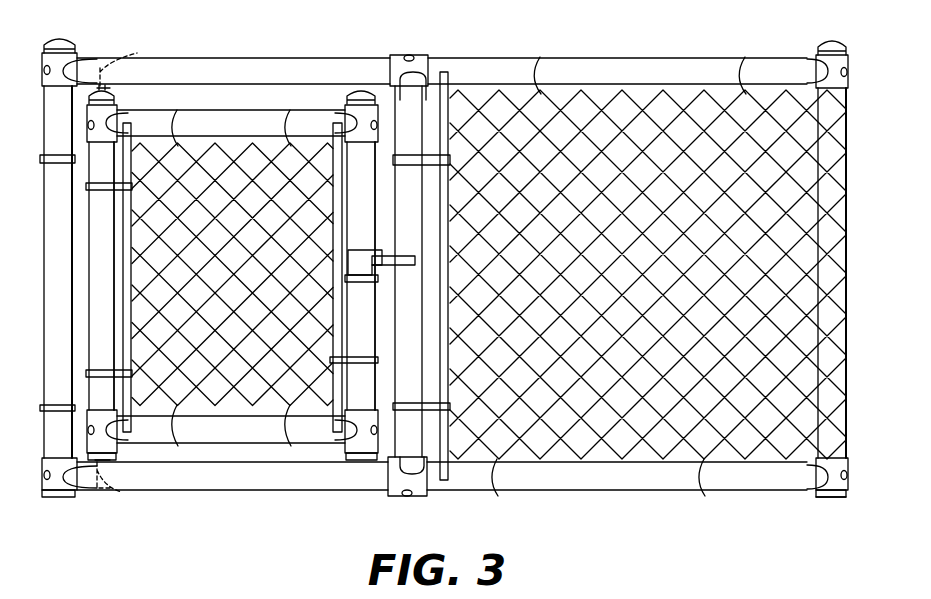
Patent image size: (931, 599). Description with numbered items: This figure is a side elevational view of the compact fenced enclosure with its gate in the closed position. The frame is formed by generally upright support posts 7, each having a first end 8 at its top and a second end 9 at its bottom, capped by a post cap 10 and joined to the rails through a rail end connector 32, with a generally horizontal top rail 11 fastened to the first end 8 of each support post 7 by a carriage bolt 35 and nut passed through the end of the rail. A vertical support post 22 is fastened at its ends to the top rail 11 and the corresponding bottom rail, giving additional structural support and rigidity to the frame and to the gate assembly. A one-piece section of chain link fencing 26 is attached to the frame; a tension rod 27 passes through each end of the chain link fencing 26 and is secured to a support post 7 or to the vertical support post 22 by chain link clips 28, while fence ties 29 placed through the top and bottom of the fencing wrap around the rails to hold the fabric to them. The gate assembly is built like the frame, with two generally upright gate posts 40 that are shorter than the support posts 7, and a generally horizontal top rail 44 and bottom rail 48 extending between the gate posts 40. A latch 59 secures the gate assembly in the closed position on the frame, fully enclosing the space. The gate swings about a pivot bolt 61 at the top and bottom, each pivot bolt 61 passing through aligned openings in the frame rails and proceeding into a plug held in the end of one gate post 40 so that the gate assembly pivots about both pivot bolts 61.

The support post 7 is at (50, 298).
The first end 8 is at (833, 112).
The second end 9 is at (846, 448).
The post cap 10 is at (66, 36).
The top rail 11 is at (268, 57).
The vertical support post 22 is at (412, 97).
The chain link fencing 26 is at (585, 455).
The tension rod 27 is at (455, 84).
The chain link clip 28 is at (410, 160).
The fence tie 29 is at (747, 58).
The rail end connector 32 is at (47, 86).
The carriage bolt 35 is at (413, 498).
The gate post 40 is at (95, 329).
The top rail 44 is at (245, 116).
The bottom rail 48 is at (225, 435).
The latch 59 is at (361, 258).
The pivot bolt 61 is at (130, 58).